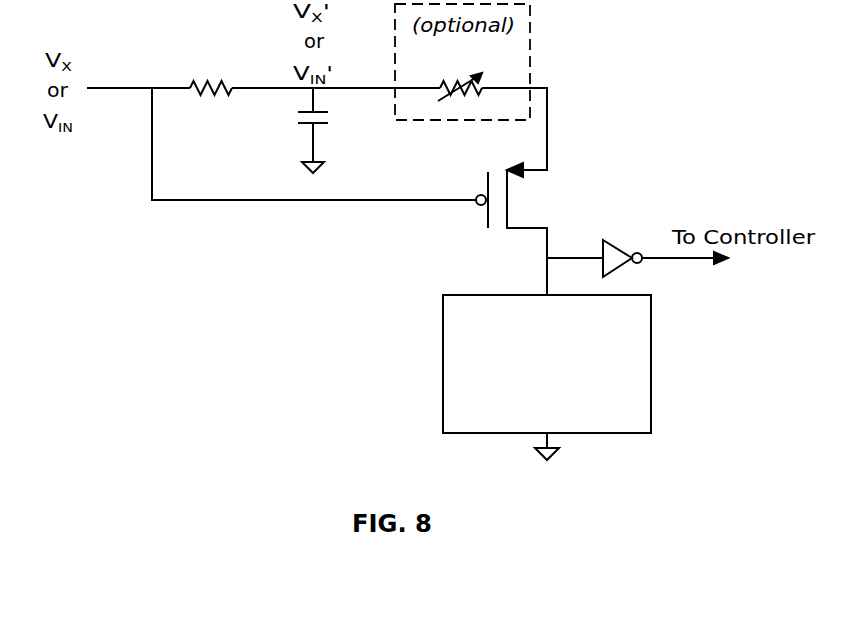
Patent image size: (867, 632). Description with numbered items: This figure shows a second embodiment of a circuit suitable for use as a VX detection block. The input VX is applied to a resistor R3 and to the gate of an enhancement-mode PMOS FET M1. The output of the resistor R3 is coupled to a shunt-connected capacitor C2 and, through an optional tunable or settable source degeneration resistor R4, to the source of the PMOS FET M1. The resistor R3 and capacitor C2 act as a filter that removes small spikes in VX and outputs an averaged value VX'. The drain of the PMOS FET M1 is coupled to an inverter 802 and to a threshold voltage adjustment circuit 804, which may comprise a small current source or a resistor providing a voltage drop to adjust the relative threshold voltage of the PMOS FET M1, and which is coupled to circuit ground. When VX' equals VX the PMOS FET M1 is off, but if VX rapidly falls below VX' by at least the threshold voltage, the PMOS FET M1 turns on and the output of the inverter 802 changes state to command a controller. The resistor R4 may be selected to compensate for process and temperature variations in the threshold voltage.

The inverter 802 is at (608, 241).
The threshold voltage adjustment circuit 804 is at (443, 363).
The resistor R3 is at (210, 74).
The shunt-connected capacitor C2 is at (295, 130).
The source degeneration resistor R4 is at (460, 75).
The enhancement-mode PMOS FET M1 is at (515, 196).